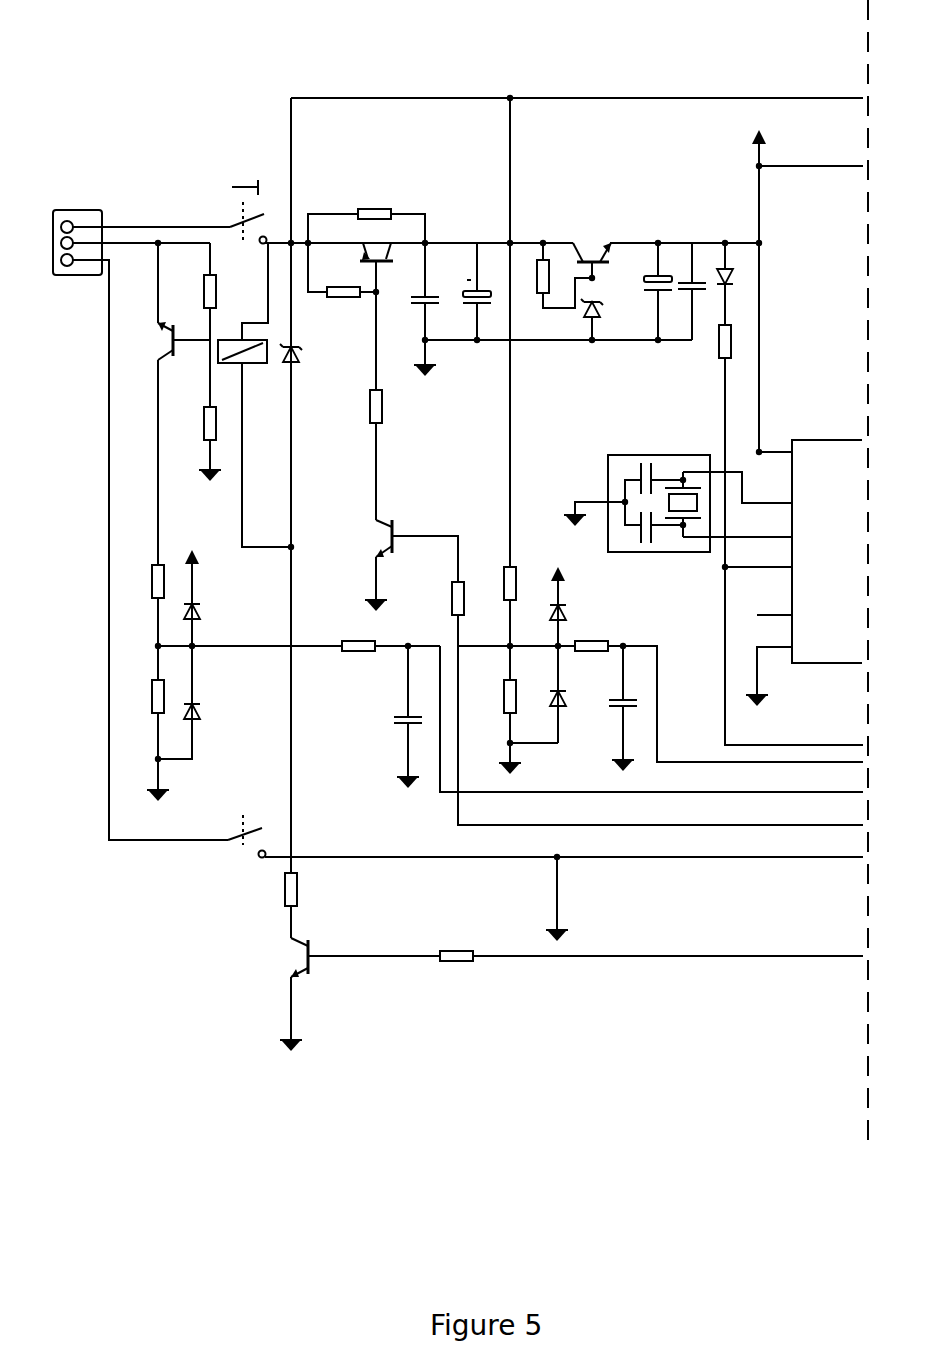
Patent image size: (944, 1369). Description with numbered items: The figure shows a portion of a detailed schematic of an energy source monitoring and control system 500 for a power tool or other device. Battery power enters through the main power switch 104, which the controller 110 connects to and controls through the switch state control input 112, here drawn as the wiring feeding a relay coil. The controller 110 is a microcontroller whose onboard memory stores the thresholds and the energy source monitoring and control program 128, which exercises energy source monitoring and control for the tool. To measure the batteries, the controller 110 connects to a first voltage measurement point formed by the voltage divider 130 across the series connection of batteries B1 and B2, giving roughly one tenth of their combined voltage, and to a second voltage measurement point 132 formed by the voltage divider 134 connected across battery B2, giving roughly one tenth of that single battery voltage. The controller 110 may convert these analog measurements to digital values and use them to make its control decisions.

The main power switch 104 is at (230, 212).
The controller 110 is at (818, 440).
The switch state control input 112 is at (242, 446).
The energy source monitoring and control program 128 is at (512, 645).
The voltage divider 130 is at (493, 535).
The second voltage measurement point 132 is at (156, 646).
The voltage divider 134 is at (127, 708).
The energy source monitoring and control system 500 is at (138, 1239).